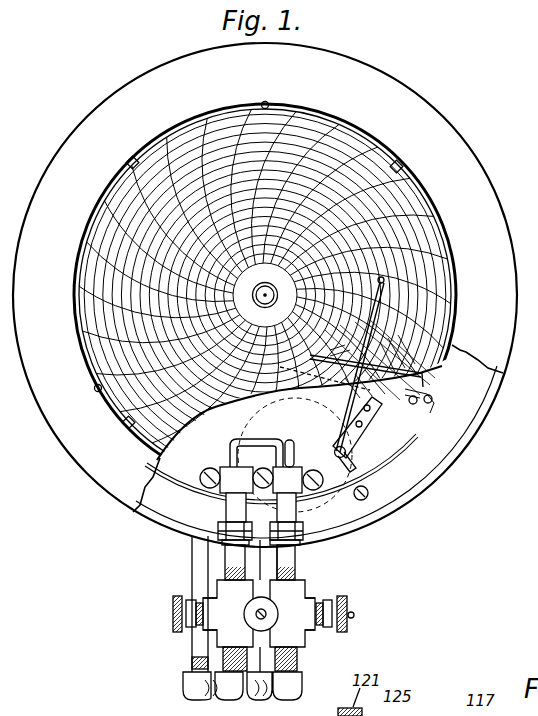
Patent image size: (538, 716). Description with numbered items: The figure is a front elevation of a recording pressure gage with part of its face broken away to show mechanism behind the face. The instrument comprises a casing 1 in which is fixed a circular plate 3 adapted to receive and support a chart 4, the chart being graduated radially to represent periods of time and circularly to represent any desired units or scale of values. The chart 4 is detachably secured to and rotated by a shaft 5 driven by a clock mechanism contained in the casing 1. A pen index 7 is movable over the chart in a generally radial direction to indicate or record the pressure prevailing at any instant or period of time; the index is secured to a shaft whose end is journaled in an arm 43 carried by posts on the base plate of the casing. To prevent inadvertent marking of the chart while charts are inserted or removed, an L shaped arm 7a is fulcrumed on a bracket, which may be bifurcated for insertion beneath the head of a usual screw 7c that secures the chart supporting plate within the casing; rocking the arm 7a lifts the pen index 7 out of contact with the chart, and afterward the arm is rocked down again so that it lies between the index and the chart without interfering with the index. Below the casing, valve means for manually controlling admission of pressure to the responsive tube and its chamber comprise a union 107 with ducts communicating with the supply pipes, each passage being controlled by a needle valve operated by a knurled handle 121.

The casing 1 is at (478, 402).
The circular plate 3 is at (445, 370).
The chart 4 is at (410, 218).
The shaft 5 is at (265, 286).
The pen index 7 is at (382, 286).
The L shaped arm 7a is at (413, 343).
The screw 7c is at (437, 410).
The arm 43 is at (405, 455).
The union 107 is at (292, 592).
The knurled handle 121 is at (175, 623).